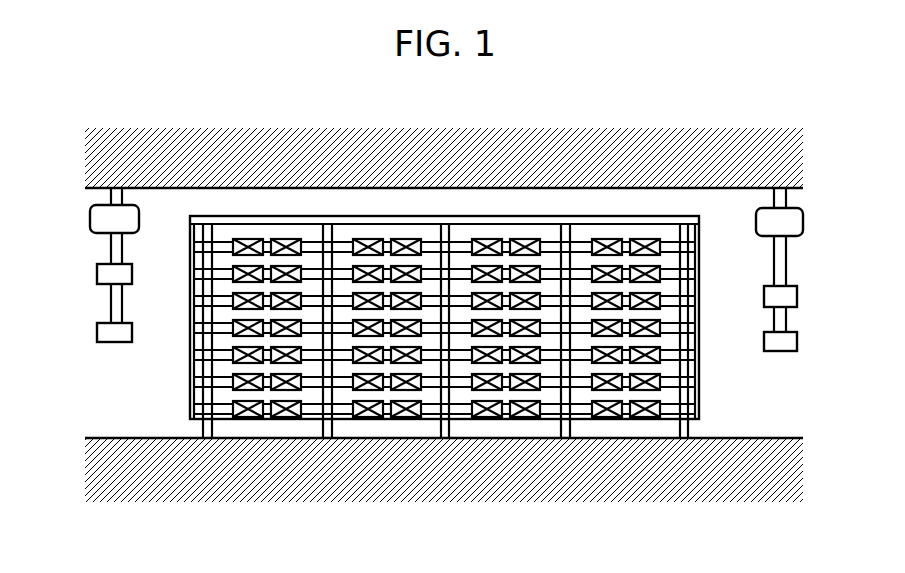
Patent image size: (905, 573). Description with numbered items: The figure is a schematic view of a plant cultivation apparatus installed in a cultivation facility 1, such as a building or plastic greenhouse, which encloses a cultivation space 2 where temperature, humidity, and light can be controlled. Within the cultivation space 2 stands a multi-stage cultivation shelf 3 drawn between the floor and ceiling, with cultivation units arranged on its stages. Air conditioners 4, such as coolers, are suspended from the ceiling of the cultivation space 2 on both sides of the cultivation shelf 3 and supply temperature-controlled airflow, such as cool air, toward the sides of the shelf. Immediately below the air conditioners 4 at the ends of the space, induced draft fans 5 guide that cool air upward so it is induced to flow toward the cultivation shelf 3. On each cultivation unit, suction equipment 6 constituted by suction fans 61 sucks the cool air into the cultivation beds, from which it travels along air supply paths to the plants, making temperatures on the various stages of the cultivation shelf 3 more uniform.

The cultivation facility 1 is at (660, 160).
The cultivation space 2 is at (514, 207).
The cultivation shelf 3 is at (330, 215).
The air conditioner 4 is at (102, 223).
The induced draft fan 5 is at (107, 333).
The suction equipment 6 is at (605, 419).
The suction fan 61 is at (285, 240).